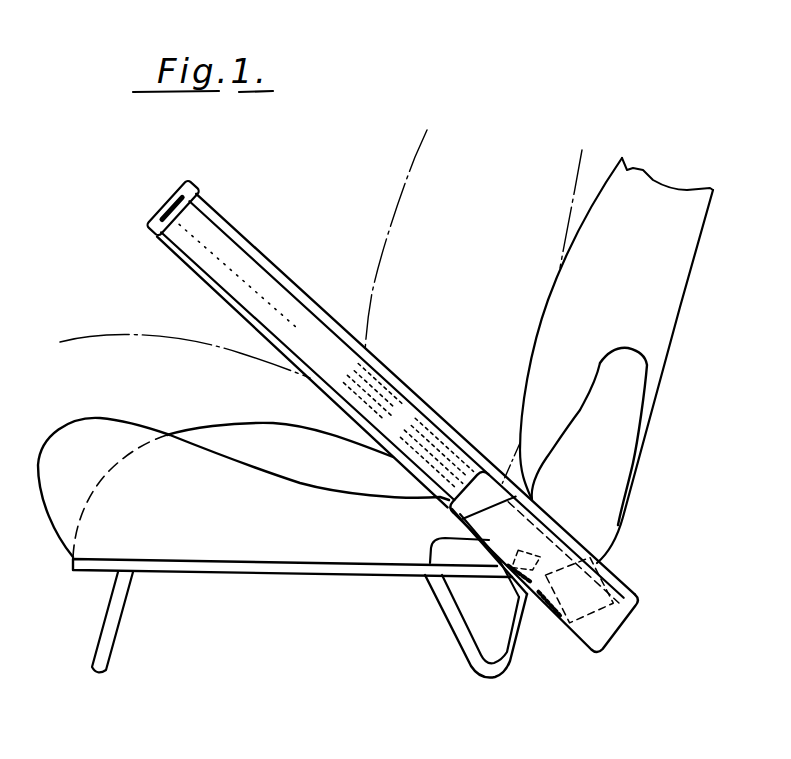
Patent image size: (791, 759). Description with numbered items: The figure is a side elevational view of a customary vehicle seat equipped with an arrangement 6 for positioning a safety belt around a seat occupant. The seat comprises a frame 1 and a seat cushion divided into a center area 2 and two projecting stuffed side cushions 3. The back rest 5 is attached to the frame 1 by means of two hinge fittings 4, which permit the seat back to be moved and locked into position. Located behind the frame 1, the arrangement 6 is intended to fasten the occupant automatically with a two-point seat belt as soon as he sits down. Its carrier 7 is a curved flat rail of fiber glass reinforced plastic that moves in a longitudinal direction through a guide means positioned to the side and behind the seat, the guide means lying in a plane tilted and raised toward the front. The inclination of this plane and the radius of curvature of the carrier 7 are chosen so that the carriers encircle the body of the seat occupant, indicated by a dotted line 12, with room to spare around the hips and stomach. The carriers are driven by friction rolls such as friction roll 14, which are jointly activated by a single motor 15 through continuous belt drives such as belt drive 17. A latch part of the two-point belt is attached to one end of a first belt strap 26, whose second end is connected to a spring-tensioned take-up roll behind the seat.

The frame 1 is at (304, 568).
The center area 2 is at (170, 547).
The side cushions 3 is at (303, 457).
The hinge fittings 4 is at (603, 500).
The back rest 5 is at (662, 338).
The arrangement for positioning a safety belt 6 is at (586, 660).
The carrier 7 is at (270, 264).
The dotted line 12 is at (400, 191).
The friction roll 14 is at (511, 591).
The motor 15 is at (597, 580).
The continuous belt drive 17 is at (514, 603).
The first belt strap 26 is at (337, 371).